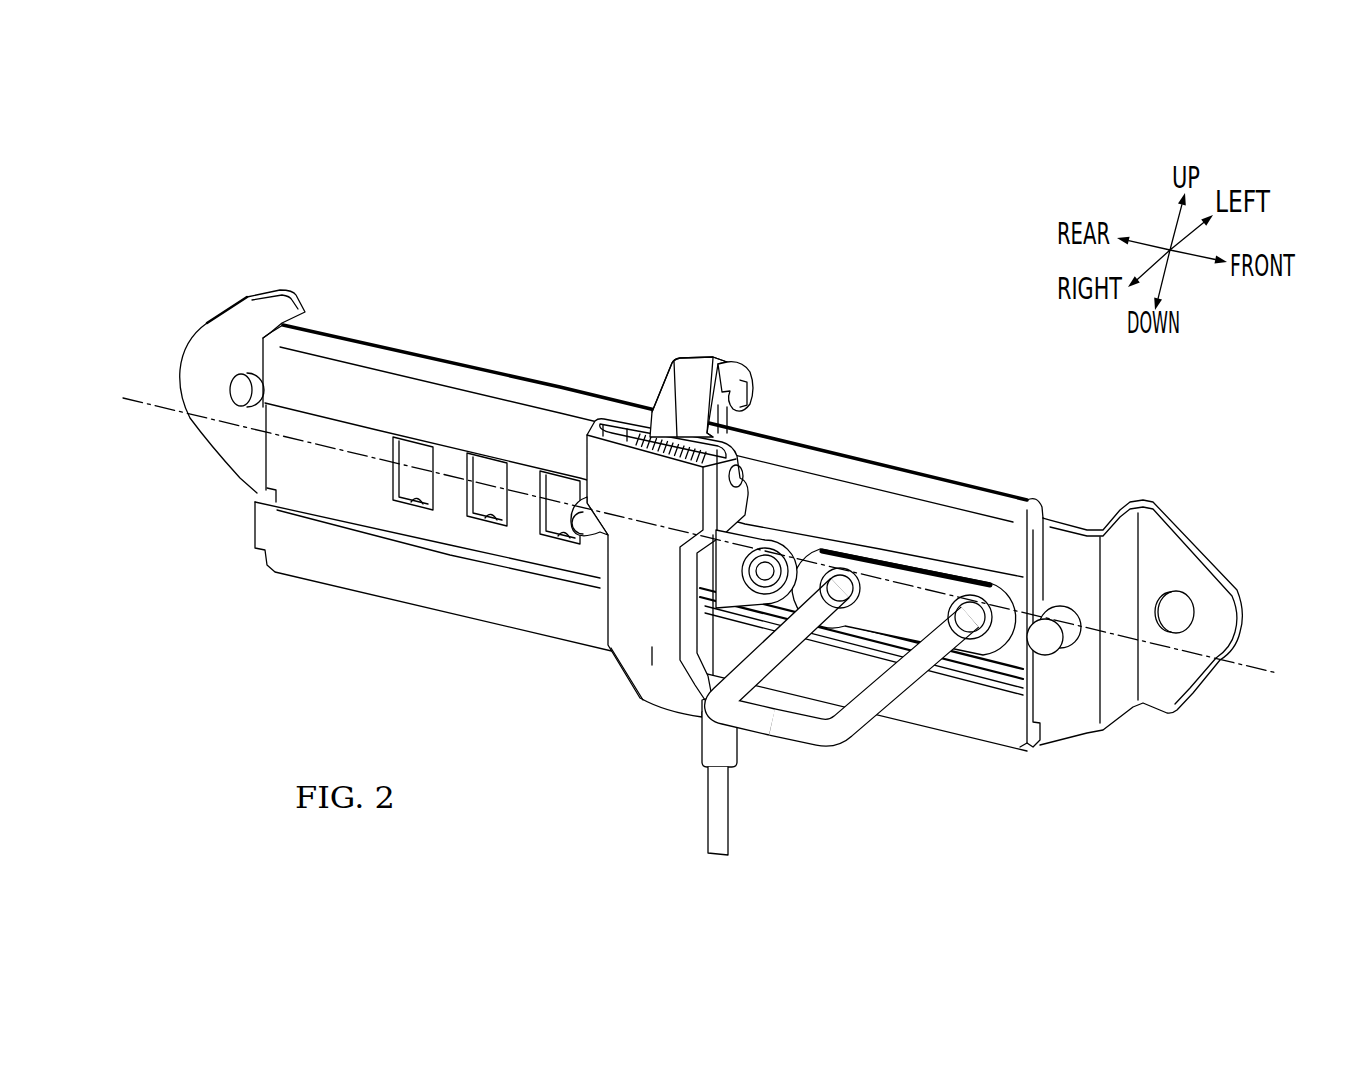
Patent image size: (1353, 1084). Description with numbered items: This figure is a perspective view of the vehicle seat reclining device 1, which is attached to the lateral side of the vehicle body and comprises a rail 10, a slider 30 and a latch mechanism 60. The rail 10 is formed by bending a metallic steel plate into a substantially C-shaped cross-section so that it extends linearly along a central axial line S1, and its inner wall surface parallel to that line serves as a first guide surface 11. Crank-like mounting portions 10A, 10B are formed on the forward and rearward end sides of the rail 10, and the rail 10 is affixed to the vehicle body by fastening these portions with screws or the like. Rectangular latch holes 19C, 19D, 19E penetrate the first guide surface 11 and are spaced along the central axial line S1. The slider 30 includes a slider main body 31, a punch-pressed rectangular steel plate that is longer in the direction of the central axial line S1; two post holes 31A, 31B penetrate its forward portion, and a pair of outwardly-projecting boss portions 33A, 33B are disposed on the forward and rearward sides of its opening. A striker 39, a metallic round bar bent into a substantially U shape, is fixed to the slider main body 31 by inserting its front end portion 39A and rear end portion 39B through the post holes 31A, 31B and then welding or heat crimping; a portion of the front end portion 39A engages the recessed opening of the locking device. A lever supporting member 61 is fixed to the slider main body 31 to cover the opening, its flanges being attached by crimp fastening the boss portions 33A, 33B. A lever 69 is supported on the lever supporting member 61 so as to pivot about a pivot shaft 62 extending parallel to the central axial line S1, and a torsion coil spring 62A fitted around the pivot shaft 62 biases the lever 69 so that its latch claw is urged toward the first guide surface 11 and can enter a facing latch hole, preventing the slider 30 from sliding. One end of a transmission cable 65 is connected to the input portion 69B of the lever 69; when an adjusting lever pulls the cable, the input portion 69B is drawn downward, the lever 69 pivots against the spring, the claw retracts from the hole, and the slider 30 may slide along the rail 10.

The vehicle seat reclining device 1 is at (469, 298).
The rail 10 is at (386, 340).
The mounting portion 10A is at (1200, 590).
The mounting portion 10B is at (202, 368).
The first guide surface 11 is at (313, 463).
The latch hole 19C is at (555, 540).
The latch hole 19D is at (480, 522).
The latch hole 19E is at (405, 507).
The slider 30 is at (1040, 666).
The slider main body 31 is at (900, 605).
The post hole 31A is at (969, 603).
The post hole 31B is at (843, 572).
The boss portion 33A is at (770, 550).
The boss portion 33B is at (583, 525).
The striker 39 is at (853, 709).
The front end portion 39A is at (957, 635).
The rear end portion 39B is at (846, 612).
The latch mechanism 60 is at (694, 512).
The lever supporting member 61 is at (642, 695).
The pivot shaft 62 is at (748, 478).
The torsion coil spring 62A is at (655, 436).
The transmission cable 65 is at (720, 790).
The lever 69 is at (690, 344).
The input portion 69B is at (735, 360).
The central axial line S1 is at (714, 546).